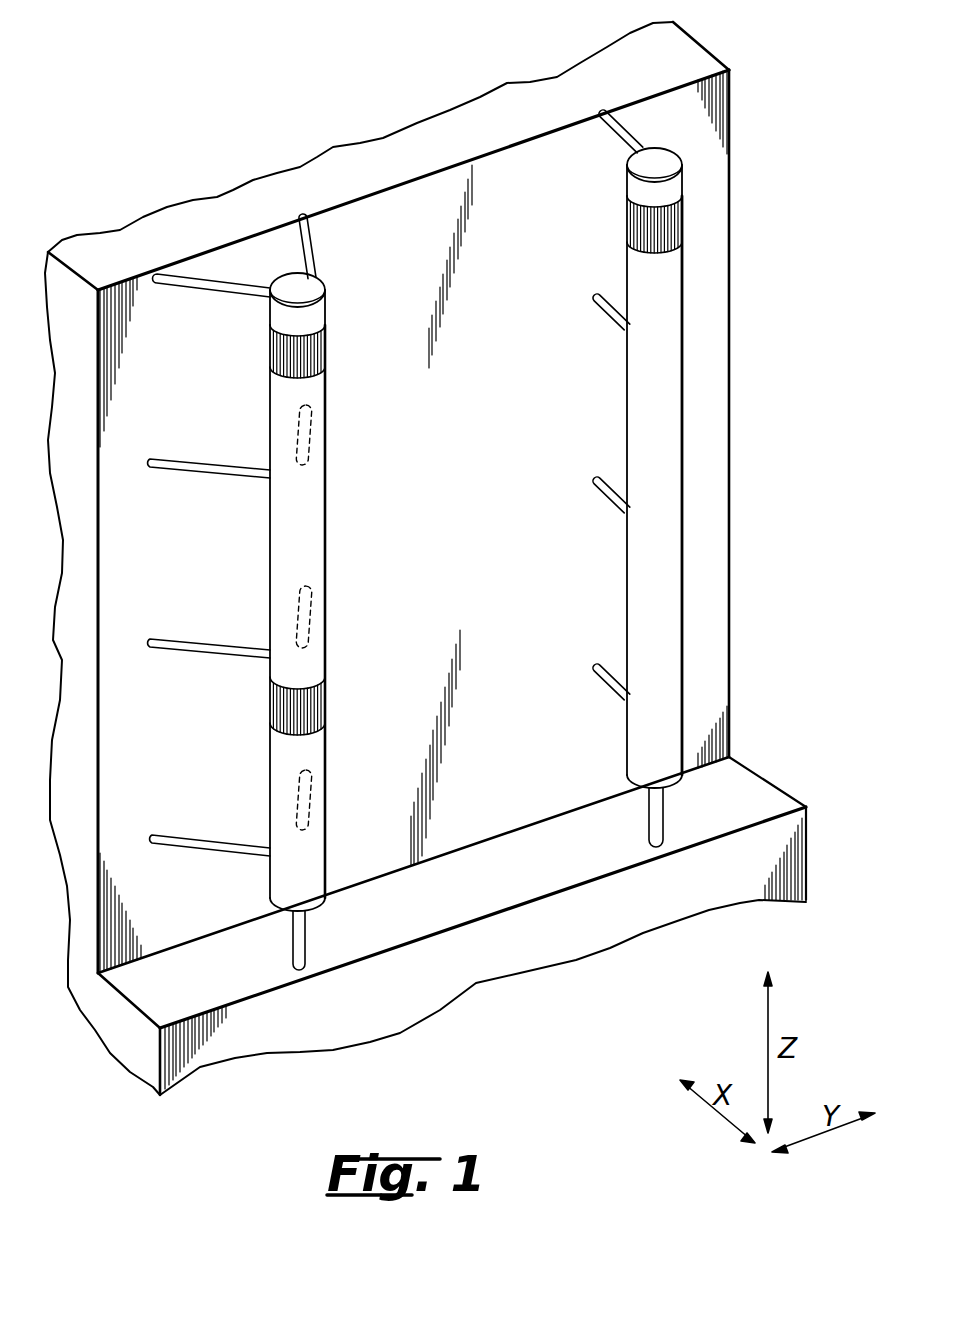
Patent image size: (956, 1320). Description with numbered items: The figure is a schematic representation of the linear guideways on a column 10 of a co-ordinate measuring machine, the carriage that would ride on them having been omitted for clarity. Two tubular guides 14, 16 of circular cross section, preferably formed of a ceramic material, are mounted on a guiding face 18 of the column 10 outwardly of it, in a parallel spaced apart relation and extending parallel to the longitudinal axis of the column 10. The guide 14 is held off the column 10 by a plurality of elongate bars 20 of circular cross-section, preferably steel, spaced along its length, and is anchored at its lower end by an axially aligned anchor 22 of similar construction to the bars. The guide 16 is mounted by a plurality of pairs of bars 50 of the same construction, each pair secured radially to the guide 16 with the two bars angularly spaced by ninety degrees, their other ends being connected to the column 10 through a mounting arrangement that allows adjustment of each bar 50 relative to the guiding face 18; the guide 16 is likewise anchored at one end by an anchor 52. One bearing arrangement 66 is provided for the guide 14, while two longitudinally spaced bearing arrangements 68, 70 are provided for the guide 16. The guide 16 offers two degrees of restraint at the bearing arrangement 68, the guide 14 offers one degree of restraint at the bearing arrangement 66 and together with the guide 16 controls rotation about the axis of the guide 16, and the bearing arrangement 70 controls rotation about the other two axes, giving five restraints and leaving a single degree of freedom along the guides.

The column 10 is at (506, 138).
The tubular guide 14 is at (633, 278).
The tubular guide 16 is at (328, 488).
The guiding face 18 is at (508, 637).
The elongate bars 20 is at (607, 313).
The anchor 22 is at (648, 828).
The pairs of bars 50 is at (241, 463).
The anchor 52 is at (290, 945).
The bearing arrangement 66 is at (629, 222).
The bearing arrangement 68 is at (328, 341).
The bearing arrangement 70 is at (328, 697).